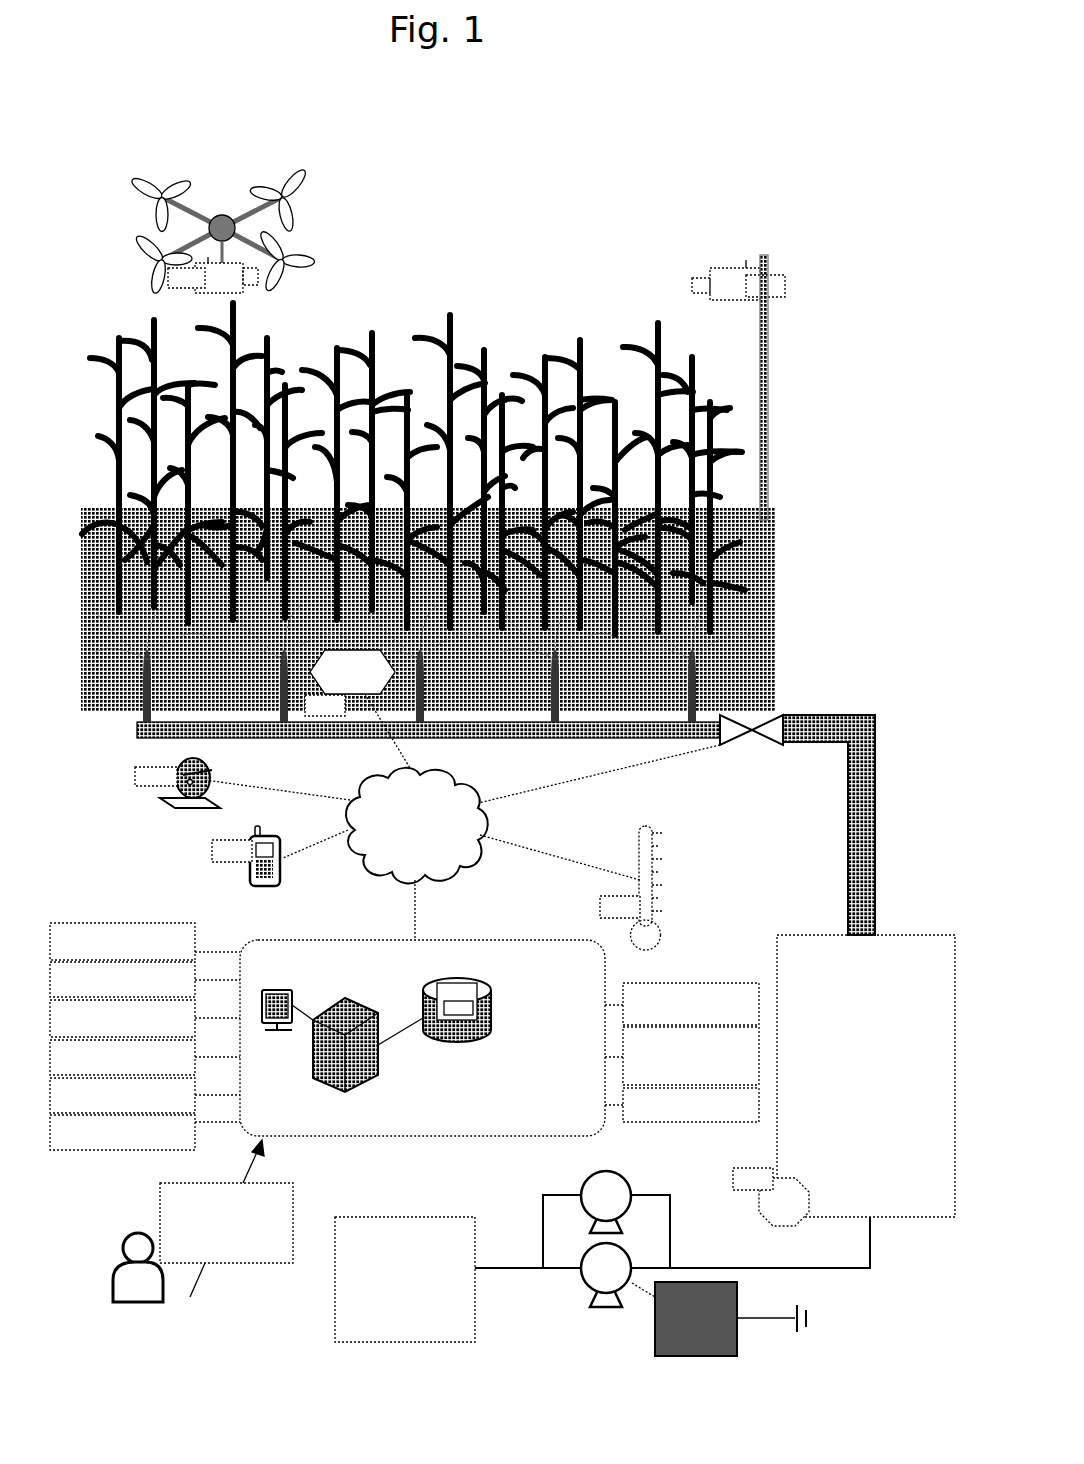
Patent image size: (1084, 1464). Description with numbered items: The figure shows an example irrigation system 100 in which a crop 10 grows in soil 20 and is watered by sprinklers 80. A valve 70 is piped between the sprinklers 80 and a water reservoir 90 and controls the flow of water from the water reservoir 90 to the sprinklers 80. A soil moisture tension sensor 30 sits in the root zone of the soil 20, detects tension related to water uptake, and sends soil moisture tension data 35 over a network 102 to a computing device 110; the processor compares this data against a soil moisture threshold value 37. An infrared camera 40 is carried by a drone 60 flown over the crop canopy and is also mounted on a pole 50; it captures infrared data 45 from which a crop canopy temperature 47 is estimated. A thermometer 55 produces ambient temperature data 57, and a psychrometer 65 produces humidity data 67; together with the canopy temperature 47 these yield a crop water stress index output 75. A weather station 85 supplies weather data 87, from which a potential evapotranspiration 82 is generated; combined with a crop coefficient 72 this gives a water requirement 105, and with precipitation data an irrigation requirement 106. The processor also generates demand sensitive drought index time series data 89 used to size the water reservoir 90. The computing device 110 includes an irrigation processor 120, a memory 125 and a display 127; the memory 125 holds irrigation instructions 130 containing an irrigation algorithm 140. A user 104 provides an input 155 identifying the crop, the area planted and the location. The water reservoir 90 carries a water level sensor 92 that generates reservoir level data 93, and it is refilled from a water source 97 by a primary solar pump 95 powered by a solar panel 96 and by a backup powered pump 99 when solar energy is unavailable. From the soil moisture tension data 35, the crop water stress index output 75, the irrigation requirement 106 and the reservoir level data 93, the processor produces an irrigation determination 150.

The irrigation system 100 is at (438, 79).
The crop 10 is at (118, 415).
The soil 20 is at (108, 632).
The soil moisture tension sensor 30 is at (360, 709).
The soil moisture tension data 35 is at (325, 705).
The soil moisture threshold value 37 is at (682, 1004).
The infrared camera 40 is at (216, 288).
The infrared data 45 is at (476, 282).
The crop canopy temperature 47 is at (145, 979).
The pole 50 is at (768, 350).
The thermometer 55 is at (648, 940).
The ambient temperature data 57 is at (620, 907).
The drone 60 is at (222, 214).
The psychrometer 65 is at (274, 886).
The humidity data 67 is at (232, 851).
The valve 70 is at (753, 736).
The coefficient 72 is at (682, 1105).
The crop water stress index output 75 is at (145, 941).
The sprinklers 80 is at (147, 693).
The potential evapotranspiration 82 is at (682, 1056).
The weather station 85 is at (176, 808).
The weather data 87 is at (156, 776).
The demand sensitive drought index time series data 89 is at (145, 1018).
The water reservoir 90 is at (866, 1076).
The water level sensor 92 is at (784, 1202).
The reservoir level data 93 is at (753, 1179).
The primary solar pump 95 is at (606, 1275).
The solar panel 96 is at (737, 1340).
The water source 97 is at (602, 1268).
The backup powered pump 99 is at (606, 1202).
The network 102 is at (422, 854).
The user 104 is at (158, 1279).
The water requirement 105 is at (145, 1057).
The irrigation requirement 106 is at (145, 1095).
The computing device 110 is at (422, 1038).
The irrigation processor 120 is at (330, 1085).
The memory 125 is at (447, 1042).
The display 127 is at (275, 1030).
The irrigation instructions 130 is at (480, 978).
The irrigation algorithm 140 is at (465, 1012).
The irrigation determination 150 is at (145, 1132).
The input 155 is at (226, 1201).